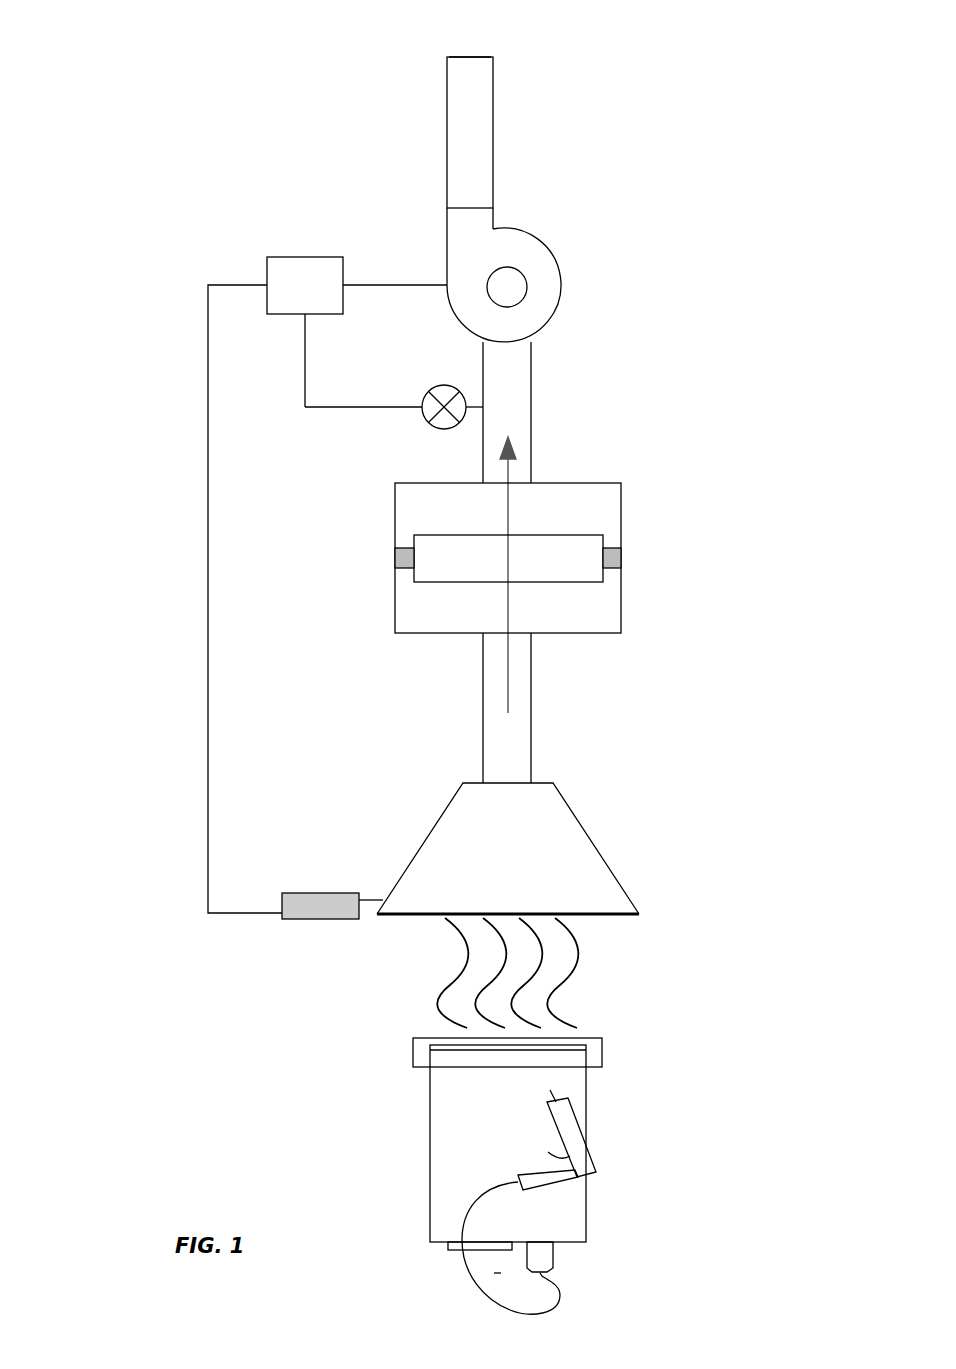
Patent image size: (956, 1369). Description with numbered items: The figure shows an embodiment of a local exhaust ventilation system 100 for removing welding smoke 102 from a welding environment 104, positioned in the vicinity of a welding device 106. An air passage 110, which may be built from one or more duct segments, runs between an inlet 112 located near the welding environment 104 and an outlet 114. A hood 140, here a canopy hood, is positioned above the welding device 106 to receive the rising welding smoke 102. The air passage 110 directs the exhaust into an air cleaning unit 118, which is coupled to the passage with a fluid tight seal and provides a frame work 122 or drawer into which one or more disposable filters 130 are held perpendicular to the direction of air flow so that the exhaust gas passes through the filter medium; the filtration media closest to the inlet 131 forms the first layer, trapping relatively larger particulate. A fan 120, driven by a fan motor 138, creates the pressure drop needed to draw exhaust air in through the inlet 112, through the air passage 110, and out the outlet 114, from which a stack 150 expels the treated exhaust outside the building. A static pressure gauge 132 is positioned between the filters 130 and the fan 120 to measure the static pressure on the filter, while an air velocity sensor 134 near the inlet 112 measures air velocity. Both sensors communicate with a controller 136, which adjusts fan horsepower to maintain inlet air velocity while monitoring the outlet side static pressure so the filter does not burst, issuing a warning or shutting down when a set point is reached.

The local exhaust ventilation system 100 is at (162, 84).
The welding smoke 102 is at (611, 973).
The welding environment 104 is at (610, 1141).
The welding device 106 is at (616, 1202).
The air passage 110 is at (601, 562).
The inlet 112 is at (468, 963).
The outlet 114 is at (516, 35).
The air cleaning unit 118 is at (453, 605).
The fan 120 is at (571, 275).
The frame work 122 is at (572, 591).
The disposable filter 130 is at (444, 602).
The filtration media closest to the inlet 131 is at (554, 638).
The static pressure gauge 132 is at (385, 434).
The air velocity sensor 134 is at (284, 952).
The controller 136 is at (307, 545).
The fan motor 138 is at (580, 241).
The hood 140 is at (457, 848).
The stack 150 is at (398, 127).